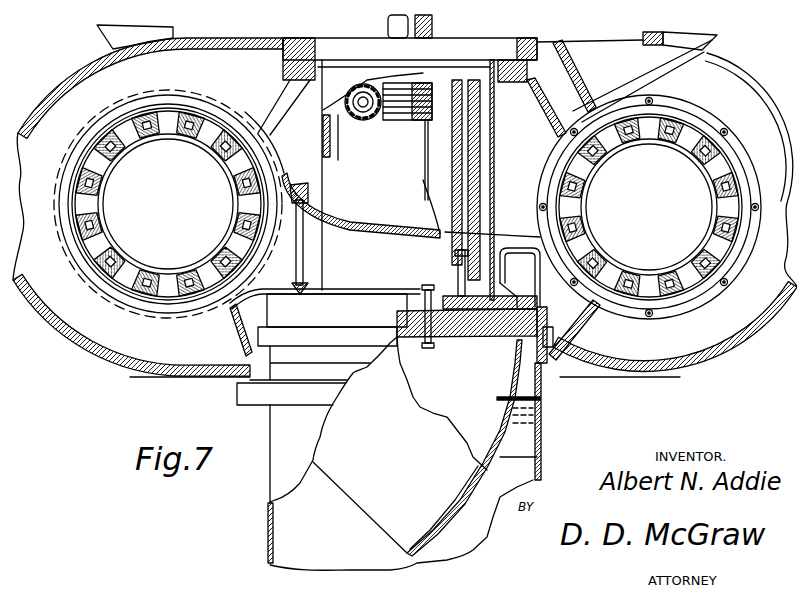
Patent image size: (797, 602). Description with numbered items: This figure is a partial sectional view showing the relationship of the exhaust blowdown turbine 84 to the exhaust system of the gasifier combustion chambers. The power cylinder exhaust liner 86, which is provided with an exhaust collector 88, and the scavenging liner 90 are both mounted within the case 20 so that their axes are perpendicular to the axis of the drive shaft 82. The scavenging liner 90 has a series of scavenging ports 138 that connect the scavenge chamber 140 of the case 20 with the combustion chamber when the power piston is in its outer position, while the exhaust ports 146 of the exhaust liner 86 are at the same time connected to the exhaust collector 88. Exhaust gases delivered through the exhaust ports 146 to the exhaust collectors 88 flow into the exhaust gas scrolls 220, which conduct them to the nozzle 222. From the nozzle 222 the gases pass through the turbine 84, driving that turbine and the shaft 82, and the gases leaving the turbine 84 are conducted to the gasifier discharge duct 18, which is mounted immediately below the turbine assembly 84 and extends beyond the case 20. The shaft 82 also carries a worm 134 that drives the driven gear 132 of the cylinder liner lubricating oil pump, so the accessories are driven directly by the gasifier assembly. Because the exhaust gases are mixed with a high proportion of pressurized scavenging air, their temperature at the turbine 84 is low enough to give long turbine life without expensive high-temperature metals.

The gasifier discharge duct 18 is at (541, 460).
The case 20 is at (68, 344).
The drive shaft 82 is at (398, 180).
The blowdown turbine assembly 84 is at (462, 325).
The power cylinder exhaust liner 86 is at (178, 135).
The exhaust collector 88 is at (138, 104).
The scavenging liner 90 is at (675, 115).
The driven gear 132 is at (352, 120).
The worm 134 is at (520, 58).
The scavenging ports 138 is at (684, 142).
The scavenge chamber 140 is at (112, 350).
The exhaust ports 146 is at (184, 140).
The exhaust gas scrolls 220 is at (380, 218).
The nozzle 222 is at (520, 277).